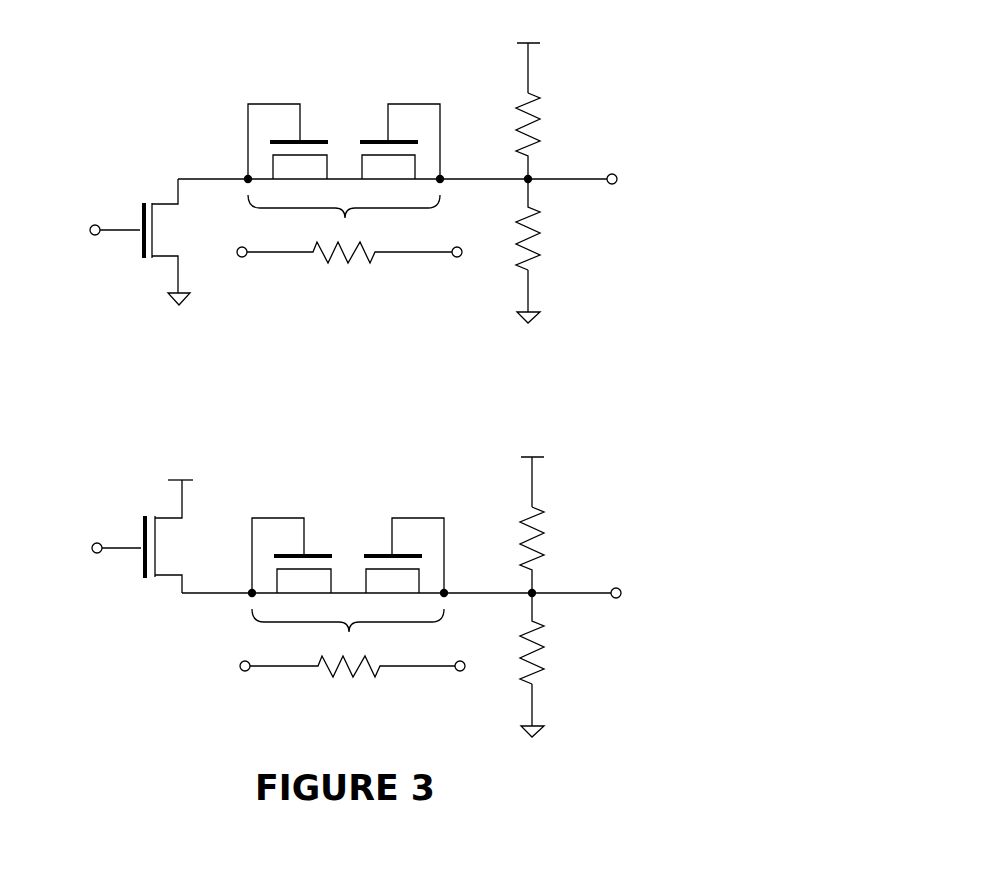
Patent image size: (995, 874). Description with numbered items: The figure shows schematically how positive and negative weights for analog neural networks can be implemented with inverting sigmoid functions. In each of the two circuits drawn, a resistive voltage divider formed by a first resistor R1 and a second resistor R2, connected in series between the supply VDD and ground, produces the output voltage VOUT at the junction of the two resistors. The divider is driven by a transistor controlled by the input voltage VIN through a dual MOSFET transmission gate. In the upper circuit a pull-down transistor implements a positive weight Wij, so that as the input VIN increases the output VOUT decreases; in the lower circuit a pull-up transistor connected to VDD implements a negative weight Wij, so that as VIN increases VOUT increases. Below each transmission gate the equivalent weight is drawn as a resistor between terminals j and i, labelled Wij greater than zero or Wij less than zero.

The first divider resistor R1 is at (553, 343).
The second divider resistor R2 is at (553, 431).
The input voltage VIN is at (113, 386).
The output voltage VOUT is at (610, 387).
The supply voltage VDD is at (354, 259).
The neural weight Wij is at (351, 479).
The terminal i is at (466, 459).
The terminal j is at (235, 462).